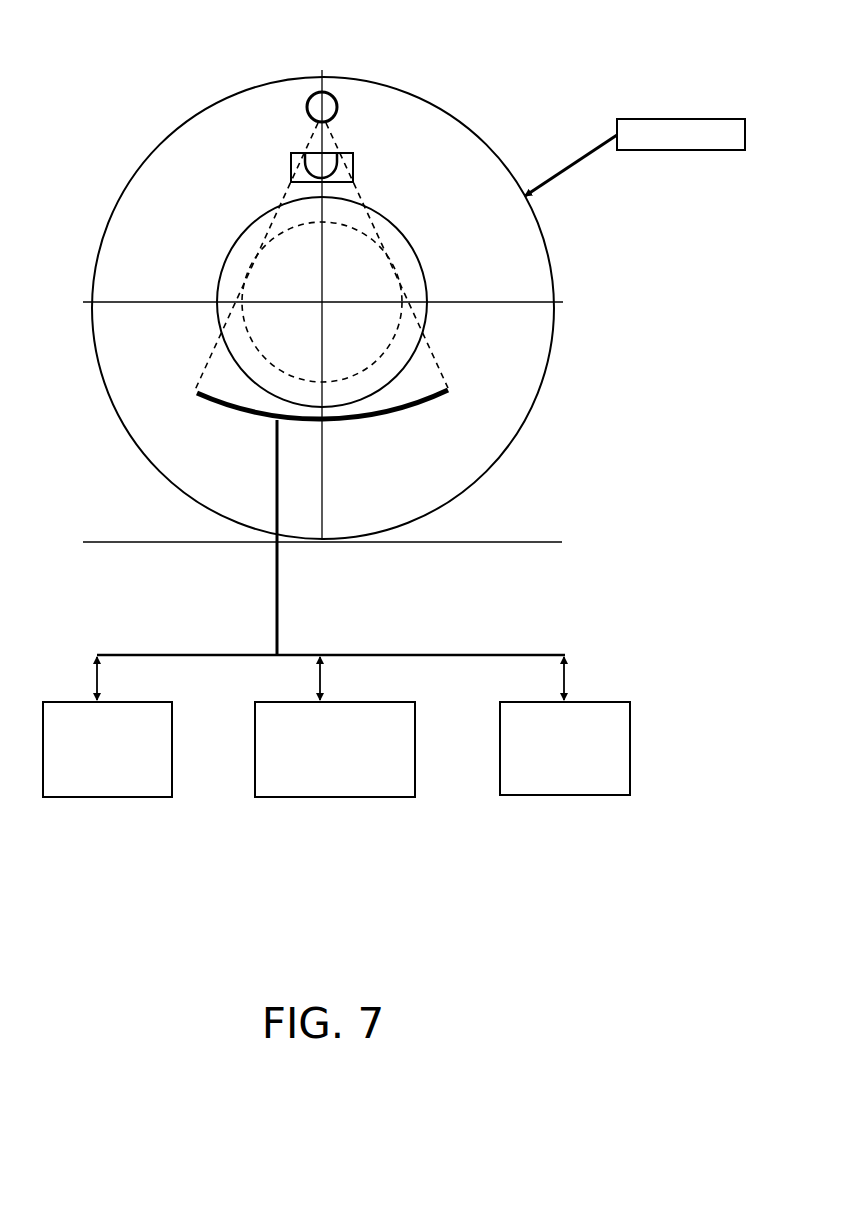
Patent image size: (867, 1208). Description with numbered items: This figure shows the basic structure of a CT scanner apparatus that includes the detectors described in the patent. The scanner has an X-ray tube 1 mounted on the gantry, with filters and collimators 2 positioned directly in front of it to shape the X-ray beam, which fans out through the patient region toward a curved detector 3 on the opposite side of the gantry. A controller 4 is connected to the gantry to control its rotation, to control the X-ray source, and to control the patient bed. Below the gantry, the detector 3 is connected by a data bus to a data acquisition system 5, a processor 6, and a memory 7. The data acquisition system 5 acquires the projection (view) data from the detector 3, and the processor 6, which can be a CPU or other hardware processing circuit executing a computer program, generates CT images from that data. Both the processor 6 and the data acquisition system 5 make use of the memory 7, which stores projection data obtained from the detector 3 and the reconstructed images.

The X-ray tube 1 is at (333, 95).
The filters and collimators 2 is at (353, 158).
The detector 3 is at (450, 392).
The controller 4 is at (725, 151).
The data acquisition system 5 is at (115, 800).
The processor 6 is at (370, 800).
The memory 7 is at (596, 799).